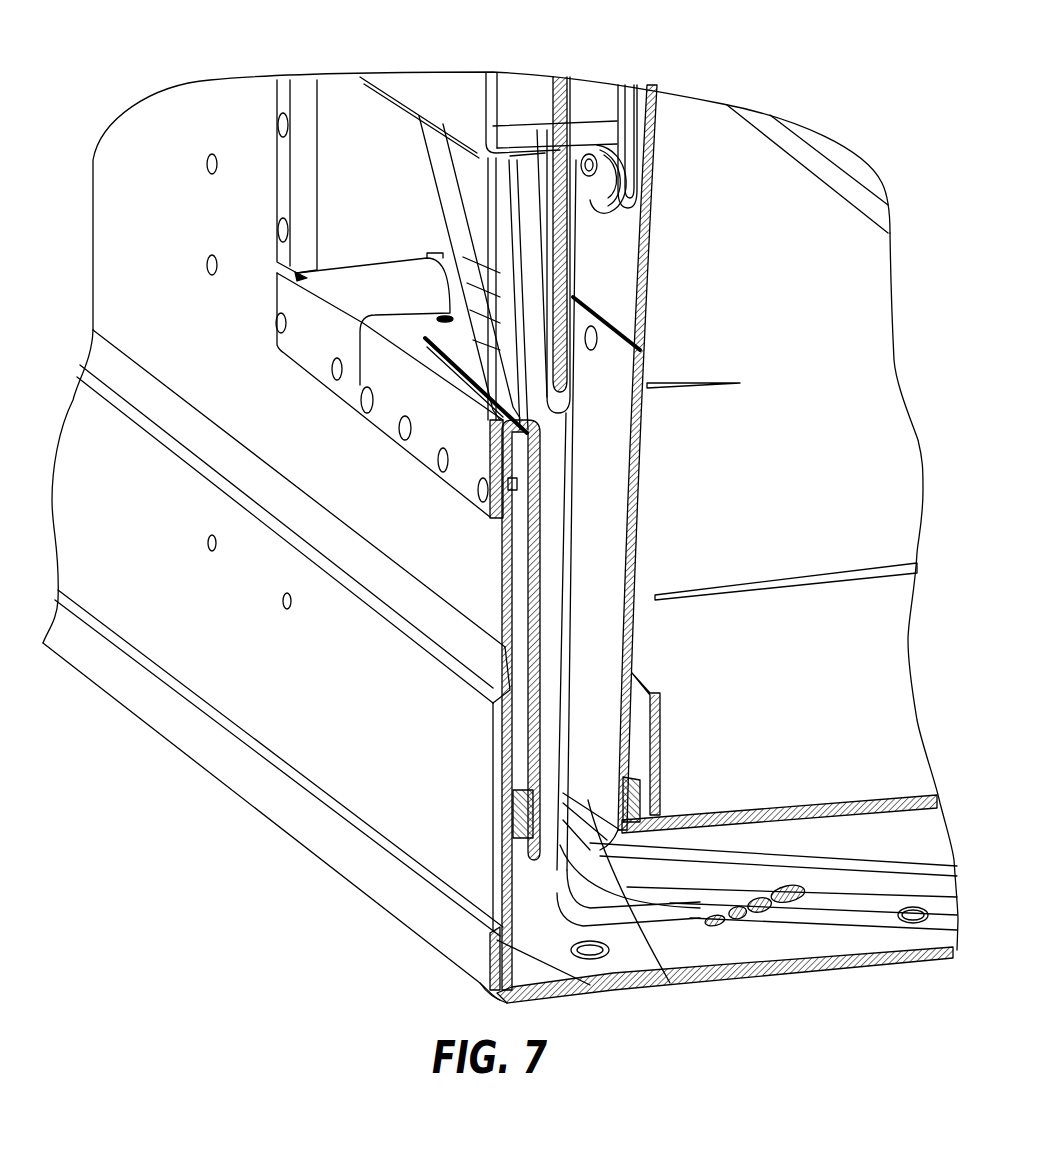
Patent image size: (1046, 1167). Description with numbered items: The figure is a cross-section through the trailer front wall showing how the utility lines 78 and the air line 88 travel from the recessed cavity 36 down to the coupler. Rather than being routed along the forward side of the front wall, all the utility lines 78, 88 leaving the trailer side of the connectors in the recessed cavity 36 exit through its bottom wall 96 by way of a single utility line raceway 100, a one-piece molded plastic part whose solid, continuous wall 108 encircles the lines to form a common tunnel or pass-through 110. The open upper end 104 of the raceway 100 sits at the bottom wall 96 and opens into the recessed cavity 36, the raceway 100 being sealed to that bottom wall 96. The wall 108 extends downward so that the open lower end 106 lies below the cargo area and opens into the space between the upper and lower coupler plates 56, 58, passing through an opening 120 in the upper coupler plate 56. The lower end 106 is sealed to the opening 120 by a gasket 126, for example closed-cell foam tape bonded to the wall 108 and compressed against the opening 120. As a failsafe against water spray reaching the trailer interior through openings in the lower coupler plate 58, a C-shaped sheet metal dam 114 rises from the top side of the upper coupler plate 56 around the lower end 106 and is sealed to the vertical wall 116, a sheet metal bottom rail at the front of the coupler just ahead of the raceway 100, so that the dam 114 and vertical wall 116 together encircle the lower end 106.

The recessed cavity 36 is at (365, 170).
The upper coupler plate 56 is at (822, 794).
The lower coupler plate 58 is at (833, 972).
The utility lines 78 is at (531, 395).
The air line 88 is at (428, 147).
The bottom wall 96 is at (377, 280).
The utility line raceway 100 is at (653, 534).
The upper end 104 is at (603, 382).
The lower end 106 is at (670, 983).
The wall 108 is at (535, 731).
The pass-through 110 is at (640, 627).
The dam 114 is at (662, 727).
The vertical wall 116 is at (460, 833).
The opening 120 is at (695, 907).
The gasket 126 is at (662, 802).